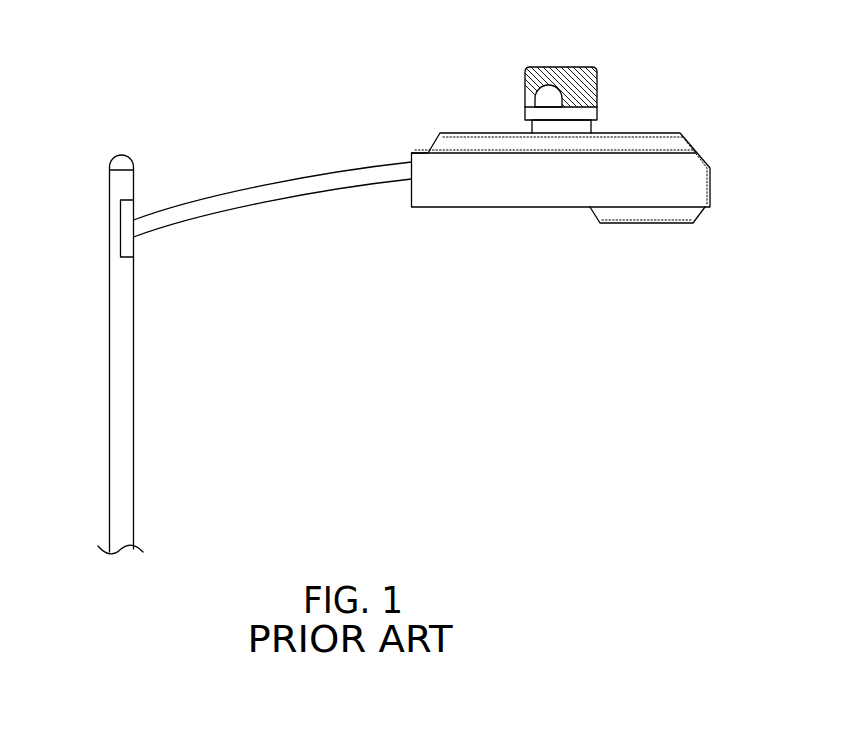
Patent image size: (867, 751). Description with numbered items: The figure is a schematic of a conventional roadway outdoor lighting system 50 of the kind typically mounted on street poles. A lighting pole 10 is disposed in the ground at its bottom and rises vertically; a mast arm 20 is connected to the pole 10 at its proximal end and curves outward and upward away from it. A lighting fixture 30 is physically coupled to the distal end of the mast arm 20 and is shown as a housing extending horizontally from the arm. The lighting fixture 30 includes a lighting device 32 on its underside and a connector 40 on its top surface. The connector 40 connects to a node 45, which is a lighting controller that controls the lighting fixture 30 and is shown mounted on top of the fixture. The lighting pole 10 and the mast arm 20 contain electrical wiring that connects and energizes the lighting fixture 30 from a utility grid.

The lighting pole 10 is at (108, 353).
The mast arm 20 is at (270, 182).
The lighting fixture 30 is at (673, 143).
The lighting device 32 is at (647, 227).
The connector 40 is at (585, 127).
The node 45 is at (559, 65).
The outdoor lighting system 50 is at (243, 89).